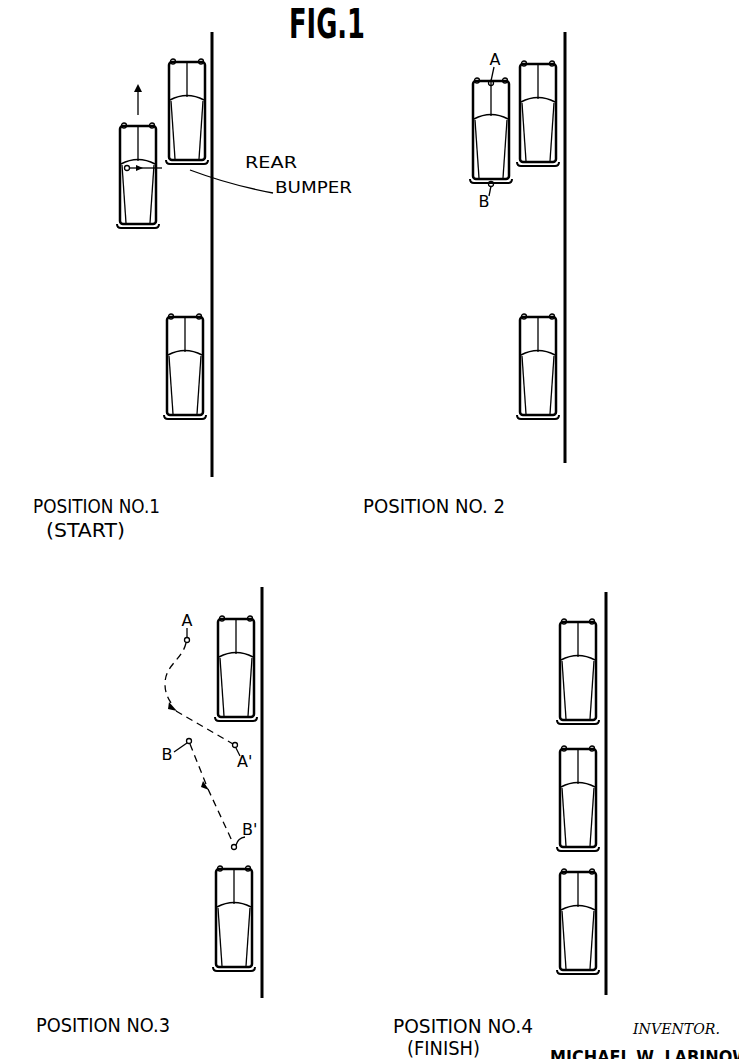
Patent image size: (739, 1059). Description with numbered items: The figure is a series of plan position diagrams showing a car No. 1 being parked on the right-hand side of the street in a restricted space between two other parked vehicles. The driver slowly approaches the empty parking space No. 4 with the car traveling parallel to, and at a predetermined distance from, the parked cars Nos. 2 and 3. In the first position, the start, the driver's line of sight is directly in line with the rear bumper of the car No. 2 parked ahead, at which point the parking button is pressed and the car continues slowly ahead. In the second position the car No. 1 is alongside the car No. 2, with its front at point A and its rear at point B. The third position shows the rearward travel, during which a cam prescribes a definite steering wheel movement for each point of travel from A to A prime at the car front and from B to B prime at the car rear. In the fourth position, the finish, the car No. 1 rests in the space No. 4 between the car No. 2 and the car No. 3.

The car being parked 1 is at (358, 464).
The parked car ahead 2 is at (382, 391).
The parked car behind 3 is at (381, 644).
The empty parking space 4 is at (213, 213).